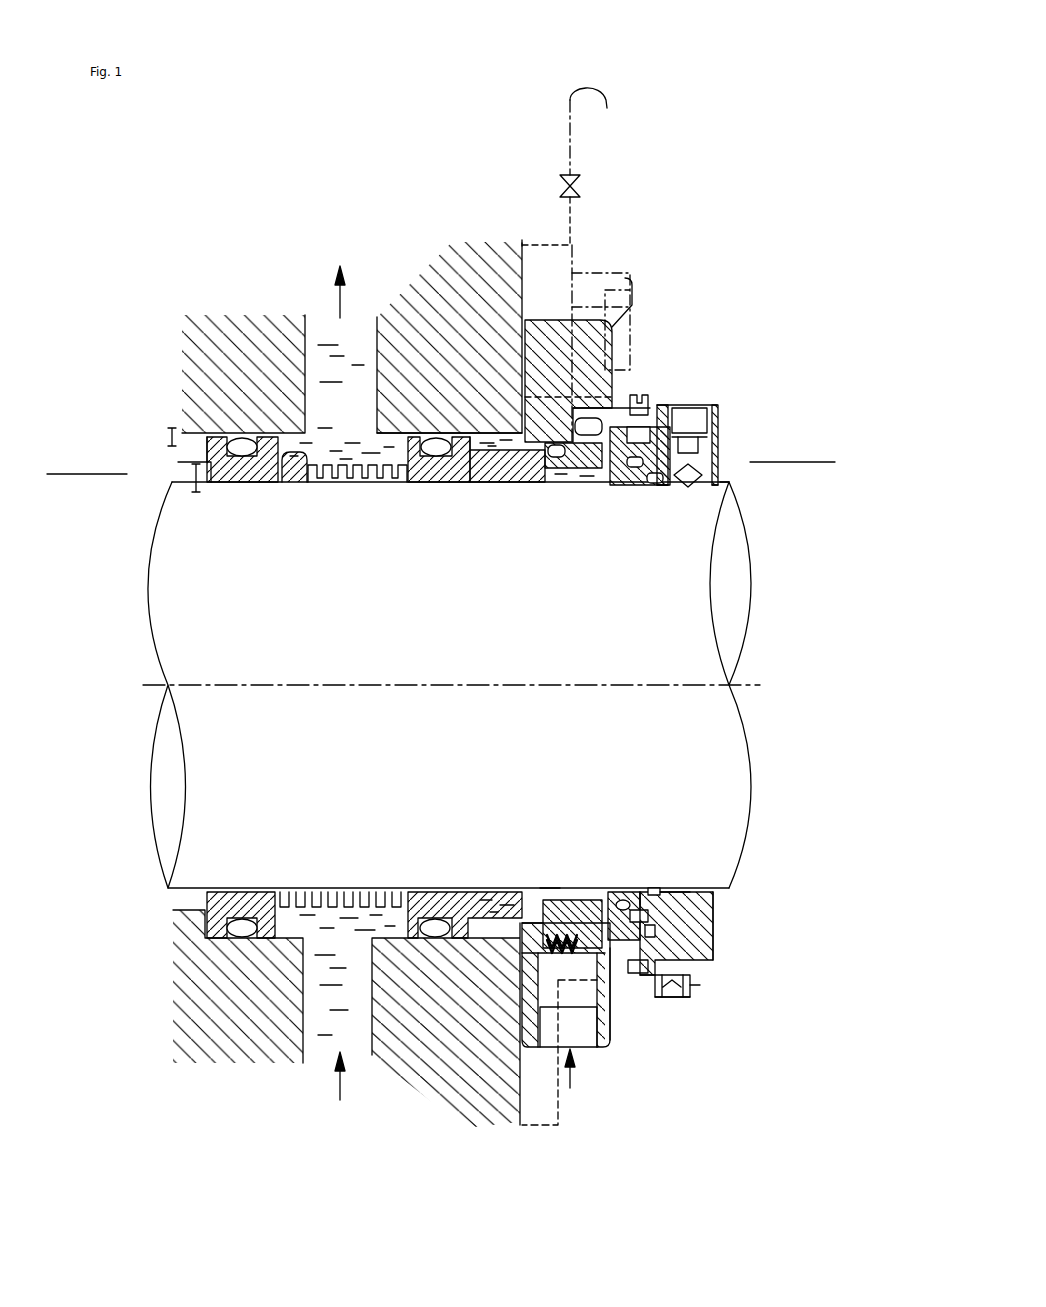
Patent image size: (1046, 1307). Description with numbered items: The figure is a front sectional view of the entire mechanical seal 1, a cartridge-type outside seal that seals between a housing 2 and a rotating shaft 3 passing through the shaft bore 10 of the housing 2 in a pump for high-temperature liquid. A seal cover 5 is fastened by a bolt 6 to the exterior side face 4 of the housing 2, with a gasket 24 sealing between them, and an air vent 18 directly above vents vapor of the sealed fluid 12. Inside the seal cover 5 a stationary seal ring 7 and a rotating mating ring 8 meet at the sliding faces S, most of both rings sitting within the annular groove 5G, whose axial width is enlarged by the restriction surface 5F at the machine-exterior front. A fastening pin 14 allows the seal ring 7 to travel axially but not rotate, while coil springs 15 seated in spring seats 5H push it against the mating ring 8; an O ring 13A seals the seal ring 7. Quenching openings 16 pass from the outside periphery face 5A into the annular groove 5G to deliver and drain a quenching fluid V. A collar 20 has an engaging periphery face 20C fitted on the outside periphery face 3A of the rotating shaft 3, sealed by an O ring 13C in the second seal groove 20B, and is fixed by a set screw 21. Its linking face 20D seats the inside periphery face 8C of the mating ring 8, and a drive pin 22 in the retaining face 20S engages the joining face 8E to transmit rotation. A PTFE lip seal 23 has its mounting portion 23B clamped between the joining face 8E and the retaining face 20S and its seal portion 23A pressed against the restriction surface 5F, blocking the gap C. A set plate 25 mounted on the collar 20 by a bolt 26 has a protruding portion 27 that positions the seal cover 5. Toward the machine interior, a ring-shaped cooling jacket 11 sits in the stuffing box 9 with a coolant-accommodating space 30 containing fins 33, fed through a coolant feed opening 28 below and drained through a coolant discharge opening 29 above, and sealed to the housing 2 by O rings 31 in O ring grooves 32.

The mechanical seal 1 is at (673, 332).
The housing 2 is at (500, 236).
The rotating shaft 3 is at (665, 633).
The outside periphery face 3A is at (727, 476).
The exterior side face 4 is at (550, 318).
The seal cover 5 is at (637, 280).
The outside periphery face 5A is at (588, 1040).
The restriction surface 5F is at (630, 985).
The annular groove 5G is at (612, 970).
The spring seats 5H is at (548, 965).
The bolt 6 is at (634, 273).
The seal ring 7 is at (550, 484).
The mating ring 8 is at (618, 487).
The inside periphery face 8C is at (610, 890).
The joining face 8E is at (640, 890).
The stuffing box 9 is at (357, 430).
The shaft bore 10 is at (187, 464).
The cooling jacket 11 is at (225, 478).
The sealed fluid 12 is at (415, 484).
The O ring 13A is at (545, 905).
The O ring 13C is at (652, 888).
The fastening pin 14 is at (600, 428).
The coil springs 15 is at (527, 905).
The quenching openings 16 is at (557, 1050).
The air vent 18 is at (570, 97).
The collar 20 is at (719, 413).
The second seal groove 20B is at (668, 889).
The engaging periphery face 20C is at (703, 883).
The linking face 20D is at (627, 888).
The retaining face 20S is at (715, 897).
The set screw 21 is at (693, 423).
The drive pin 22 is at (663, 484).
The lip seal 23 is at (717, 937).
The seal portion 23A is at (645, 978).
The mounting portion 23B is at (655, 913).
The gasket 24 is at (487, 432).
The set plate 25 is at (692, 987).
The bolt 26 is at (700, 990).
The protruding portion 27 is at (672, 998).
The coolant feed opening 28 is at (340, 1084).
The coolant discharge opening 29 is at (338, 290).
The coolant-accommodating space 30 is at (338, 480).
The O rings 31 is at (243, 440).
The O ring grooves 32 is at (243, 468).
The fins 33 is at (288, 472).
The gap C is at (618, 980).
The sliding faces S is at (605, 484).
The quenching fluid V is at (572, 1082).